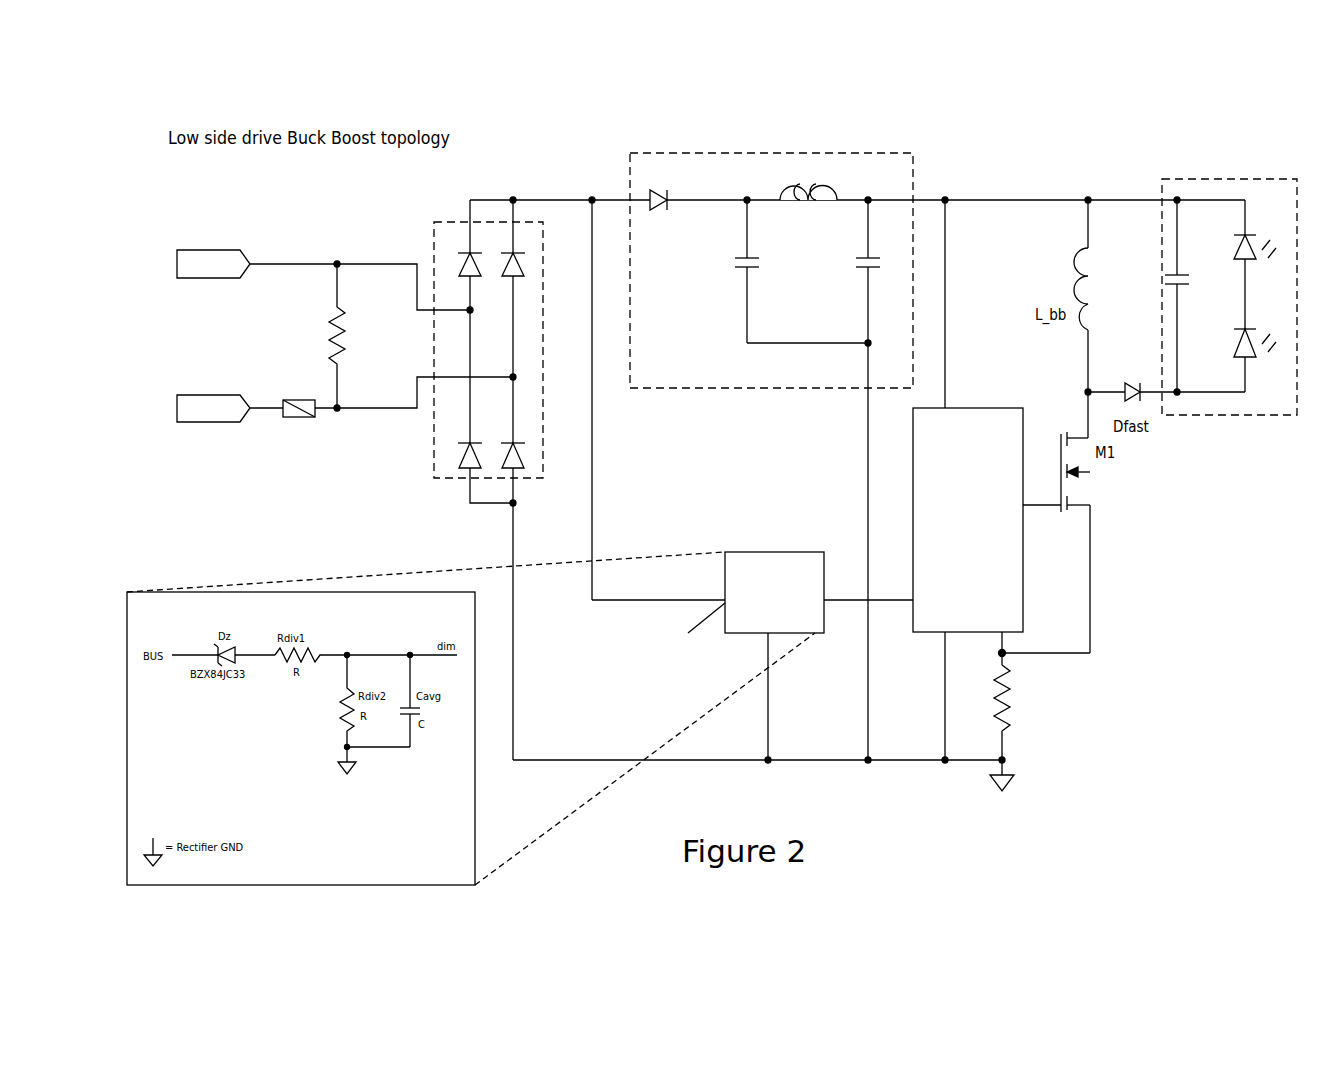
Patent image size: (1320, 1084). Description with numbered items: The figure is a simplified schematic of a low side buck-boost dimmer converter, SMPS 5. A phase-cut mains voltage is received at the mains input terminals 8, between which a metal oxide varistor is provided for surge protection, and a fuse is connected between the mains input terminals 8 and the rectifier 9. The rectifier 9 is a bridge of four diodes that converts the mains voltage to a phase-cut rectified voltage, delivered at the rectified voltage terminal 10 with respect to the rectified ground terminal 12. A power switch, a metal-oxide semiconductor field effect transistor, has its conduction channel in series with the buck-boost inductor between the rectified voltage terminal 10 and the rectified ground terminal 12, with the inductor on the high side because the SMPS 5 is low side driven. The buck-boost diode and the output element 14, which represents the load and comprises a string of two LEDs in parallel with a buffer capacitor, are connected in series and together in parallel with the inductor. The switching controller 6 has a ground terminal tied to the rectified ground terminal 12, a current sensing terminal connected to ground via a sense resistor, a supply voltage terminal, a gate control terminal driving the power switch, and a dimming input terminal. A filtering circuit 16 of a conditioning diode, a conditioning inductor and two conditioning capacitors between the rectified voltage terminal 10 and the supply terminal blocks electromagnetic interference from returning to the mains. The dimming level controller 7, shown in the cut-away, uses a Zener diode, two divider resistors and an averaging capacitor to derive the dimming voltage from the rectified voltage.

The SMPS 5 is at (1187, 720).
The switching controller 6 is at (923, 521).
The dimming level controller 7 is at (738, 656).
The mains input terminals 8 is at (220, 284).
The rectifier 9 is at (434, 222).
The rectified voltage terminal 10 is at (514, 199).
The rectified ground terminal 12 is at (513, 503).
The output element 14 is at (1162, 179).
The filtering circuit 16 is at (913, 153).